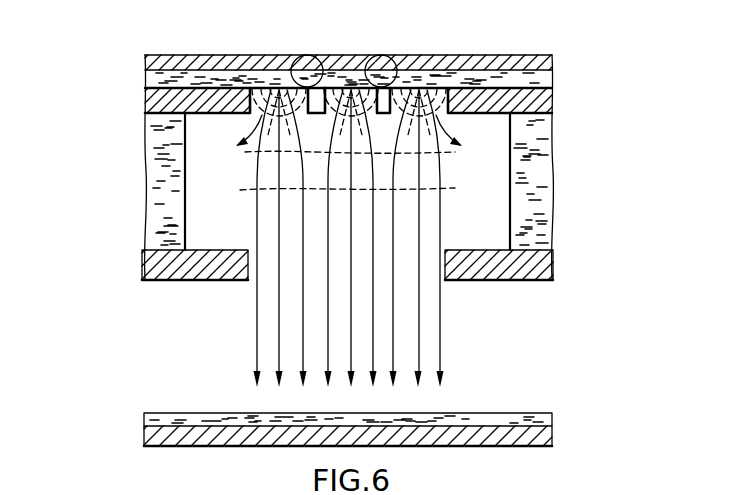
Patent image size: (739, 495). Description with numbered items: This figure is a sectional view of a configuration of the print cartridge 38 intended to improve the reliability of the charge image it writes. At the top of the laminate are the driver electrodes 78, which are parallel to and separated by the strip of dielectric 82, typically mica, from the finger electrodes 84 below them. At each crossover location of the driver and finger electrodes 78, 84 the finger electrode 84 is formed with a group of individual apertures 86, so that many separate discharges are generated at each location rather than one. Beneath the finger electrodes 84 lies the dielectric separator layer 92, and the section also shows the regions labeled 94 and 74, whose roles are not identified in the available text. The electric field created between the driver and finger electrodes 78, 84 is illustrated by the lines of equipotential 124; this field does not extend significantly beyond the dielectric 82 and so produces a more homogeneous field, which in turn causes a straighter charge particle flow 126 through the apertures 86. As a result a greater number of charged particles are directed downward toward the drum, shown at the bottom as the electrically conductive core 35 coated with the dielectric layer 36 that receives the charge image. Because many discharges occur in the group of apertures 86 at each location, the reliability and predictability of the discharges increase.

The print cartridge 38 is at (124, 190).
The driver electrodes 78 is at (553, 62).
The strip of dielectric 82 is at (553, 78).
The finger electrodes 84 is at (553, 107).
The apertures 86 is at (302, 56).
The dielectric separator layer 92 is at (553, 205).
The ink in side wall 94 is at (498, 176).
The bottom plate 74 is at (553, 262).
The lines of equipotential 124 is at (250, 165).
The charge particle flow 126 is at (279, 319).
The electrically conductive core 35 is at (552, 413).
The dielectric layer 36 is at (552, 440).